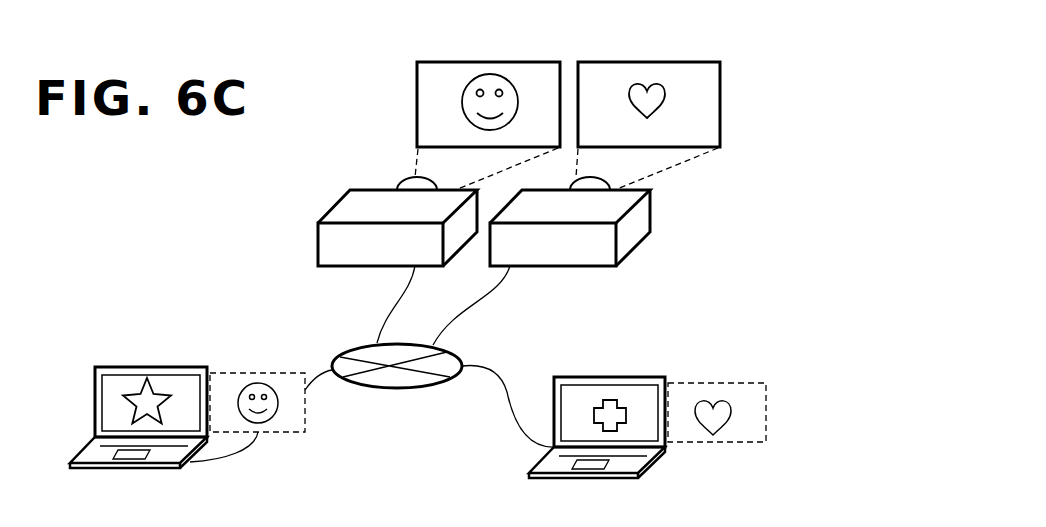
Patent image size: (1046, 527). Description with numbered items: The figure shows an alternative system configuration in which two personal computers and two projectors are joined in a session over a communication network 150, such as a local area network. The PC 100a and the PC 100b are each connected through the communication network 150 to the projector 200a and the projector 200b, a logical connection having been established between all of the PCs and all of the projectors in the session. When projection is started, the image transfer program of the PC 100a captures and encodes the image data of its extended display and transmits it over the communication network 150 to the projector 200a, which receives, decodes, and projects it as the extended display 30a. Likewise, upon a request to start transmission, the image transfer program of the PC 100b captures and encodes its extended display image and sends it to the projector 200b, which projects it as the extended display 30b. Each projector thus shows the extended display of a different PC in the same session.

The extended display 30a is at (539, 60).
The extended display 30b is at (685, 60).
The projector 200a is at (327, 267).
The projector 200b is at (583, 267).
The communication network 150 is at (367, 387).
The PC 100a is at (120, 366).
The PC 100b is at (643, 376).